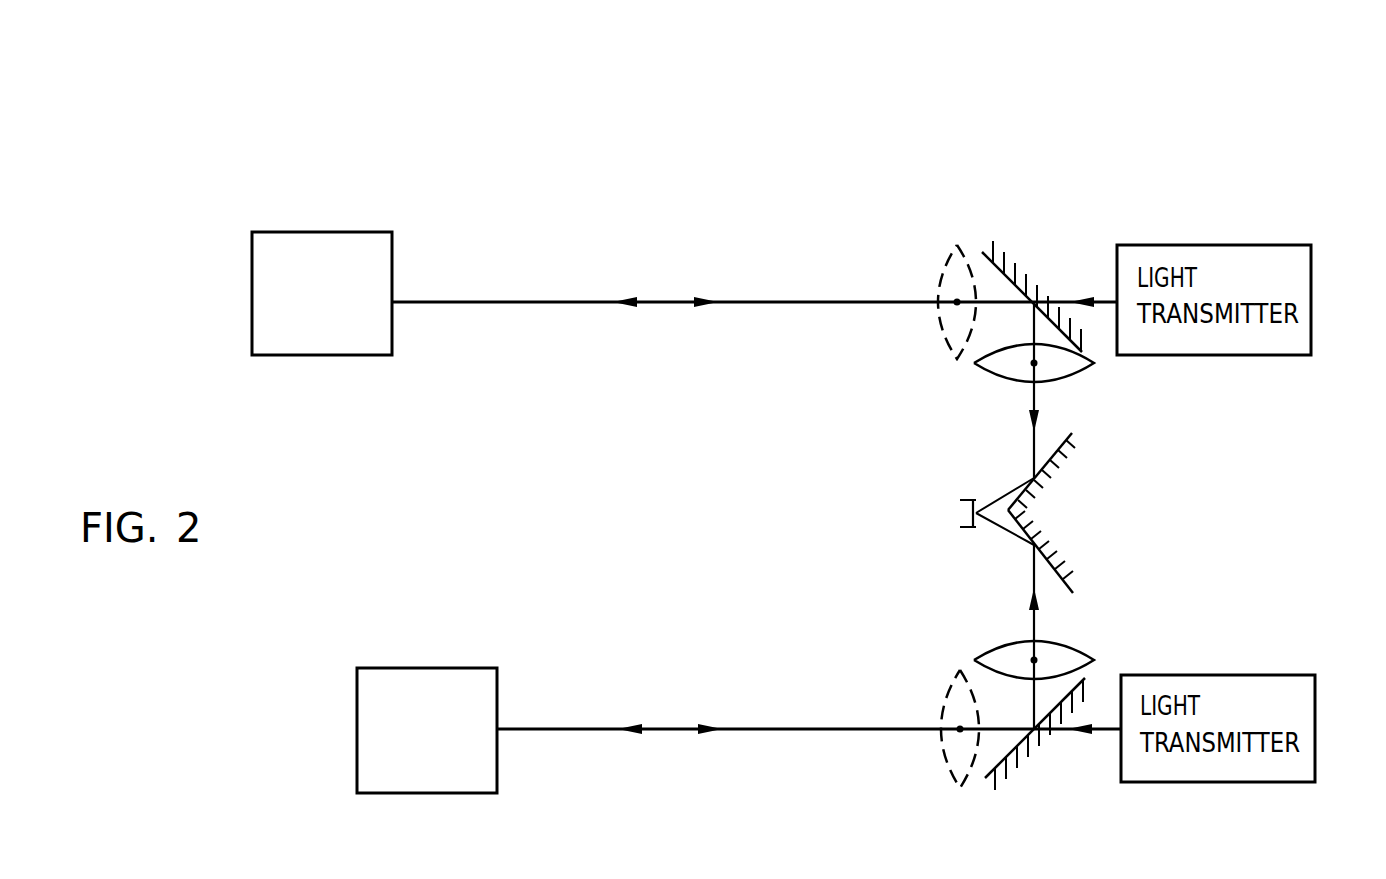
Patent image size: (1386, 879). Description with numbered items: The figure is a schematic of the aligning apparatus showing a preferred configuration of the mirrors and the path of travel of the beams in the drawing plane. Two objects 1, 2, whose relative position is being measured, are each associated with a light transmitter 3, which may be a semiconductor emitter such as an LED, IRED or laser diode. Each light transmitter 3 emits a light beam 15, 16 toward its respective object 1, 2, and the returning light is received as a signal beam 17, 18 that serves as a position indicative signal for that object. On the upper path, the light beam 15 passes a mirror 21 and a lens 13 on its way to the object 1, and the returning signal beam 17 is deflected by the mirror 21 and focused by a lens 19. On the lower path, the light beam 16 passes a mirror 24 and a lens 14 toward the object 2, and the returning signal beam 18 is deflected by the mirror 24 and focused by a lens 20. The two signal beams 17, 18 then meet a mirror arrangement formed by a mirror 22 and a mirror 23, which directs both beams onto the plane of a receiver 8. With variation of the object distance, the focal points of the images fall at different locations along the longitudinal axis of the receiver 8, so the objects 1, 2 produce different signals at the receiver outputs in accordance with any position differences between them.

The object 1 is at (313, 333).
The object 2 is at (435, 688).
The light transmitter 3 is at (718, 148).
The receiver 8 is at (955, 513).
The lens 13 is at (942, 270).
The lens 14 is at (943, 753).
The light beam 15 is at (628, 300).
The light beam 16 is at (637, 726).
The signal beam 17 is at (704, 300).
The signal beam 18 is at (706, 727).
The lens 19 is at (1066, 368).
The lens 20 is at (1072, 653).
The mirror 21 is at (1036, 286).
The mirror 22 is at (1062, 470).
The mirror 23 is at (1062, 553).
The mirror 24 is at (1025, 765).